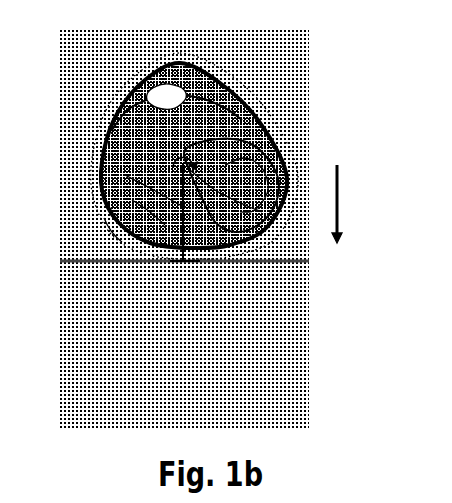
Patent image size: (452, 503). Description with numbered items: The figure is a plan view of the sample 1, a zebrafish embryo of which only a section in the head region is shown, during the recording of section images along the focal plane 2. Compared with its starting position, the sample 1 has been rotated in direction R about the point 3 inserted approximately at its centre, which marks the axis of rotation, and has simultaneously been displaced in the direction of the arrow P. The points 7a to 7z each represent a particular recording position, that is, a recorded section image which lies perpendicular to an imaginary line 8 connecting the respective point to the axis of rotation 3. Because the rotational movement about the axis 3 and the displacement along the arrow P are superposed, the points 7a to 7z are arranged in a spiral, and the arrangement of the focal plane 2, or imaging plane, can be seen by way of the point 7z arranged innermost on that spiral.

The sample 1 is at (330, 90).
The focal plane 2 is at (317, 272).
The point 3 is at (258, 186).
The imaginary line 8 is at (101, 189).
The point 7a is at (106, 227).
The point 7z is at (182, 260).
The direction of rotation R is at (172, 163).
The arrow P is at (339, 208).